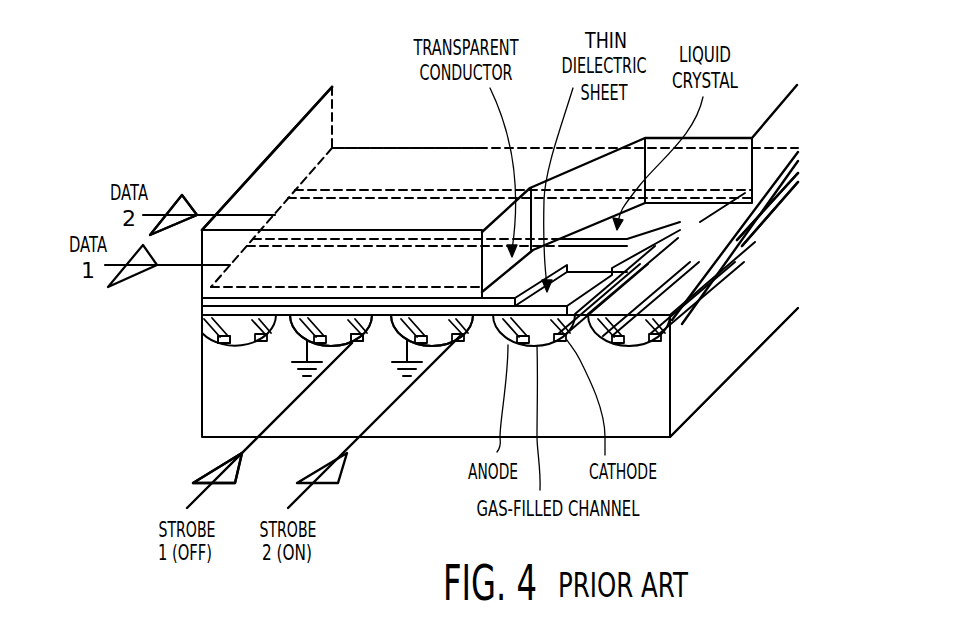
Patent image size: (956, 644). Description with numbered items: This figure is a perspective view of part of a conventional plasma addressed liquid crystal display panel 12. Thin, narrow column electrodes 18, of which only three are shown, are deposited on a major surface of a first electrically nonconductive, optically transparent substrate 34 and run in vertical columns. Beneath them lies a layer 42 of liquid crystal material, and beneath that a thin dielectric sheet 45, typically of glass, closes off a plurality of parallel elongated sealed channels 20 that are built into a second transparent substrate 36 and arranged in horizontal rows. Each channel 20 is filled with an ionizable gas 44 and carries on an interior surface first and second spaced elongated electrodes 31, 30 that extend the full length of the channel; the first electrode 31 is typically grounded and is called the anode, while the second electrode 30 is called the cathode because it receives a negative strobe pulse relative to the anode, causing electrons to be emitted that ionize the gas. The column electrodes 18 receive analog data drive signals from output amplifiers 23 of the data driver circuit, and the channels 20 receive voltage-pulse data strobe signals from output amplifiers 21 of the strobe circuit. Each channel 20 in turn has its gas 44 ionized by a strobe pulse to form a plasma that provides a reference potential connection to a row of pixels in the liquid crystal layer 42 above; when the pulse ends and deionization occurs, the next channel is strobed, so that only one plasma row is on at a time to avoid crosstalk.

The display panel 12 is at (249, 137).
The first transparent substrate 34 is at (313, 110).
The column electrodes 18 is at (373, 163).
The output amplifiers 23 is at (188, 196).
The channels 20 is at (238, 343).
The first electrode (anode) 31 is at (297, 340).
The second electrode (cathode) 30 is at (360, 343).
The output amplifiers 21 is at (218, 466).
The ionizable gas 44 is at (433, 347).
The layer of LC material 42 is at (748, 242).
The thin dielectric sheet 45 is at (750, 243).
The second transparent substrate 36 is at (722, 387).